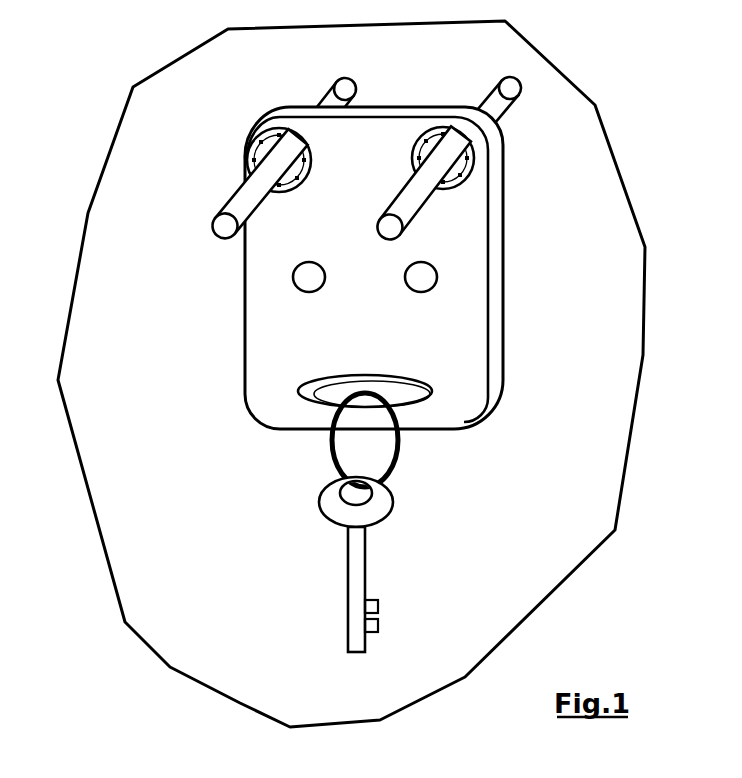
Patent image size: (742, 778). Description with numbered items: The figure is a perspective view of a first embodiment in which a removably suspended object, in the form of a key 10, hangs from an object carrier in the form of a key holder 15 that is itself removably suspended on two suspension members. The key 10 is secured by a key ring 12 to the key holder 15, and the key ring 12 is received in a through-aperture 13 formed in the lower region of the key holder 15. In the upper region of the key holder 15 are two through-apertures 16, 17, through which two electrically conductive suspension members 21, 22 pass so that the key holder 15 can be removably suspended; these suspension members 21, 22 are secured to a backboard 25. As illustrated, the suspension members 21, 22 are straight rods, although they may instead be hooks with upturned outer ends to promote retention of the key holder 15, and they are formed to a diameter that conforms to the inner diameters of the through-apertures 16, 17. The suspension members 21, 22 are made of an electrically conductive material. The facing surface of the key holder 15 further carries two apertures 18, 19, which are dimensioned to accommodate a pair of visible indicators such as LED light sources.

The key 10 is at (358, 558).
The key ring 12 is at (405, 458).
The through-aperture 13 is at (408, 388).
The key holder 15 is at (515, 281).
The through-aperture 16 is at (262, 145).
The through-aperture 17 is at (472, 163).
The aperture 18 is at (303, 277).
The aperture 19 is at (430, 282).
The suspension member 21 is at (243, 204).
The suspension member 22 is at (410, 202).
The backboard 25 is at (425, 72).